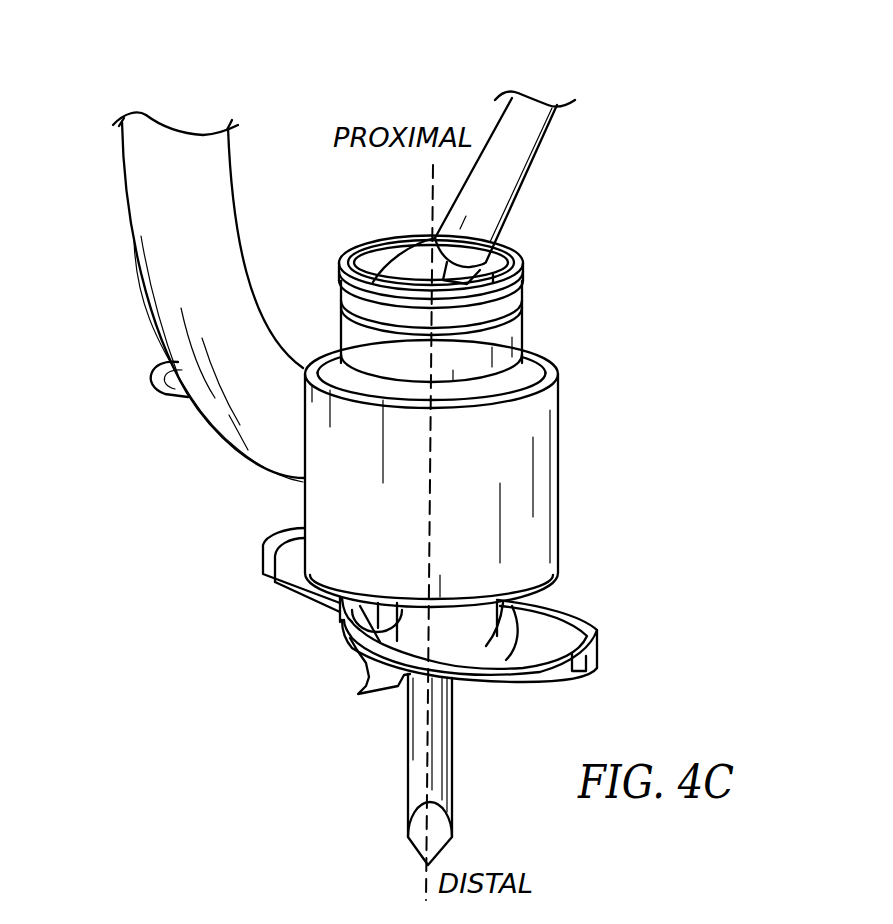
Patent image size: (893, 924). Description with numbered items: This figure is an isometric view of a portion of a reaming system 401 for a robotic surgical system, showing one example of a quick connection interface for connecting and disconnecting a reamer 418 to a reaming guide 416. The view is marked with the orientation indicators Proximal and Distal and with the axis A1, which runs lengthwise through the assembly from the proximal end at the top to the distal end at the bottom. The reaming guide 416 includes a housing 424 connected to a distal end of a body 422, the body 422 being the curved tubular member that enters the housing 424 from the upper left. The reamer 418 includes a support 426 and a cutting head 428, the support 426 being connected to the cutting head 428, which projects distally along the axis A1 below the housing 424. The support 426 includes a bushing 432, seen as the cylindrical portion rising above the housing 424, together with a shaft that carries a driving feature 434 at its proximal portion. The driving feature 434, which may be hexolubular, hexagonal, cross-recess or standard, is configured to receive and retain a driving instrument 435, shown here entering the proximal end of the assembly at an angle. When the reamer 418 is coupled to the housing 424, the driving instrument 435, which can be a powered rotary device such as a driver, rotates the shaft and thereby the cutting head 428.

The reaming system 401 is at (492, 66).
The reaming guide 416 is at (133, 188).
The body 422 is at (232, 158).
The driving instrument 435 is at (546, 150).
The driving feature 434 is at (517, 262).
The bushing 432 is at (528, 366).
The housing 424 is at (316, 490).
The support 426 is at (573, 578).
The reamer 418 is at (611, 643).
The cutting head 428 is at (407, 778).
The axis A1 is at (425, 878).